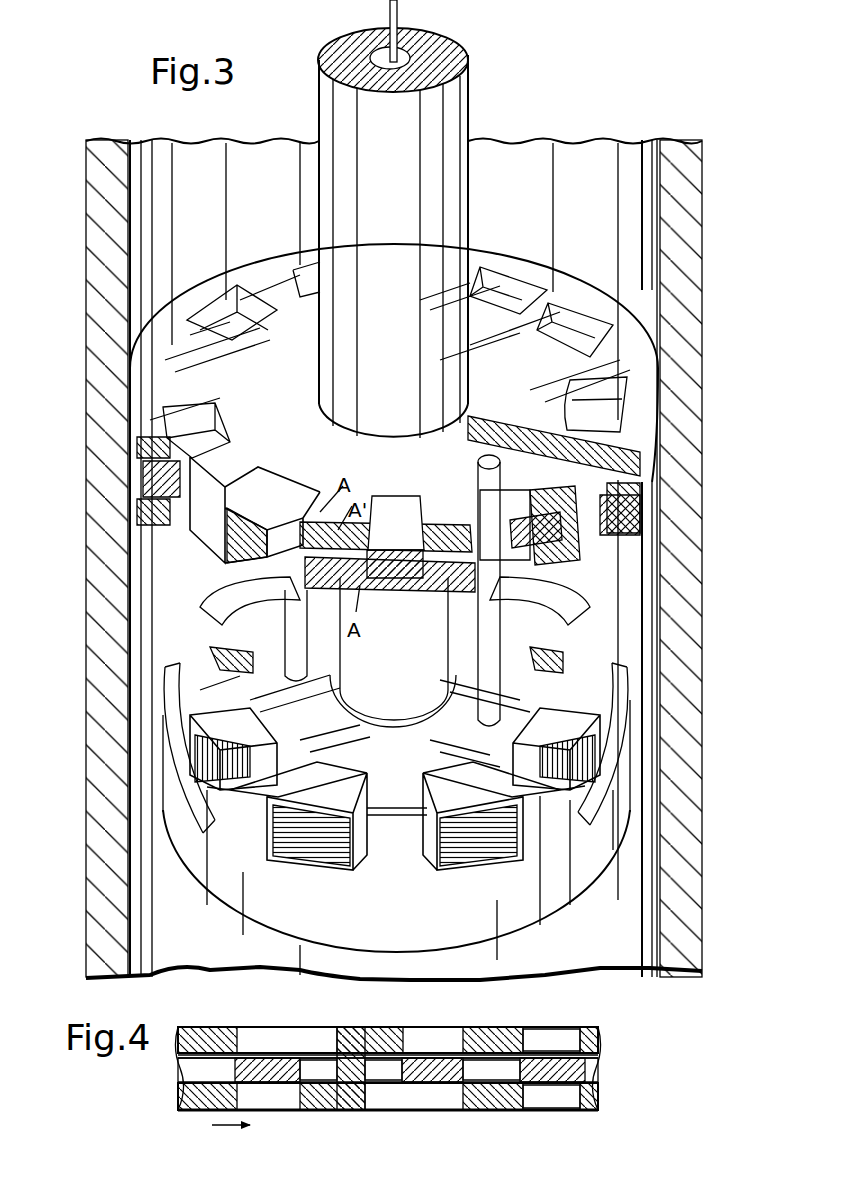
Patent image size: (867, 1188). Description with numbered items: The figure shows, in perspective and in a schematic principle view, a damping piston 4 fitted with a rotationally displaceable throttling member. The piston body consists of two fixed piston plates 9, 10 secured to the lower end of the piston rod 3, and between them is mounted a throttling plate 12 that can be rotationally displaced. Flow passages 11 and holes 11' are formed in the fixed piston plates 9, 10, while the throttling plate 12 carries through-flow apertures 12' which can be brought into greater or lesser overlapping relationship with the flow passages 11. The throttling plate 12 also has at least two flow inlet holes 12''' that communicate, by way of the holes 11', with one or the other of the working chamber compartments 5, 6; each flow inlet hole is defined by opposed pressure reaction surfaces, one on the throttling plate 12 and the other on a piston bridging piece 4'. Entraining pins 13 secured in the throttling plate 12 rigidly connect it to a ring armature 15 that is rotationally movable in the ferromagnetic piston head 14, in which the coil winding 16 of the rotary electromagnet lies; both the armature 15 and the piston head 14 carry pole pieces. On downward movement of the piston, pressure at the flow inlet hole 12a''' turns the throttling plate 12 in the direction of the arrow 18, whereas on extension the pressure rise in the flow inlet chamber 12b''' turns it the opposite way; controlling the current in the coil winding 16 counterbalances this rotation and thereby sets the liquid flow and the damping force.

In FIG. 3, the piston rod 3 is at (423, 128).
In FIG. 3, the damping piston 4 is at (432, 379).
In FIG. 3, the piston bridging piece 4' is at (262, 544).
In FIG. 4, the piston bridging piece 4' is at (354, 1088).
In FIG. 3, the working chamber compartment 5 is at (643, 176).
In FIG. 3, the working chamber compartment 6 is at (140, 893).
In FIG. 3, the piston plate 9 is at (650, 382).
In FIG. 4, the piston plate 9 is at (200, 1040).
In FIG. 3, the piston plate 10 is at (632, 519).
In FIG. 4, the piston plate 10 is at (200, 1095).
In FIG. 3, the flow passages 11 is at (639, 446).
In FIG. 4, the flow passages 11 is at (584, 1085).
In FIG. 3, the holes 11' is at (328, 585).
In FIG. 3, the throttling plate 12 is at (610, 508).
In FIG. 4, the throttling plate 12 is at (388, 1107).
In FIG. 3, the through-flow apertures 12' is at (556, 592).
In FIG. 4, the through-flow apertures 12' is at (491, 1105).
In FIG. 3, the flow inlet holes 12''' is at (198, 524).
In FIG. 4, the flow inlet hole 12a''' is at (405, 1108).
In FIG. 4, the flow inlet chamber 12b''' is at (327, 1108).
In FIG. 3, the entraining pins 13 is at (294, 640).
In FIG. 3, the piston head 14 is at (612, 826).
In FIG. 3, the ring armature 15 is at (588, 690).
In FIG. 3, the coil winding 16 is at (600, 757).
In FIG. 4, the arrow 18 is at (228, 1138).